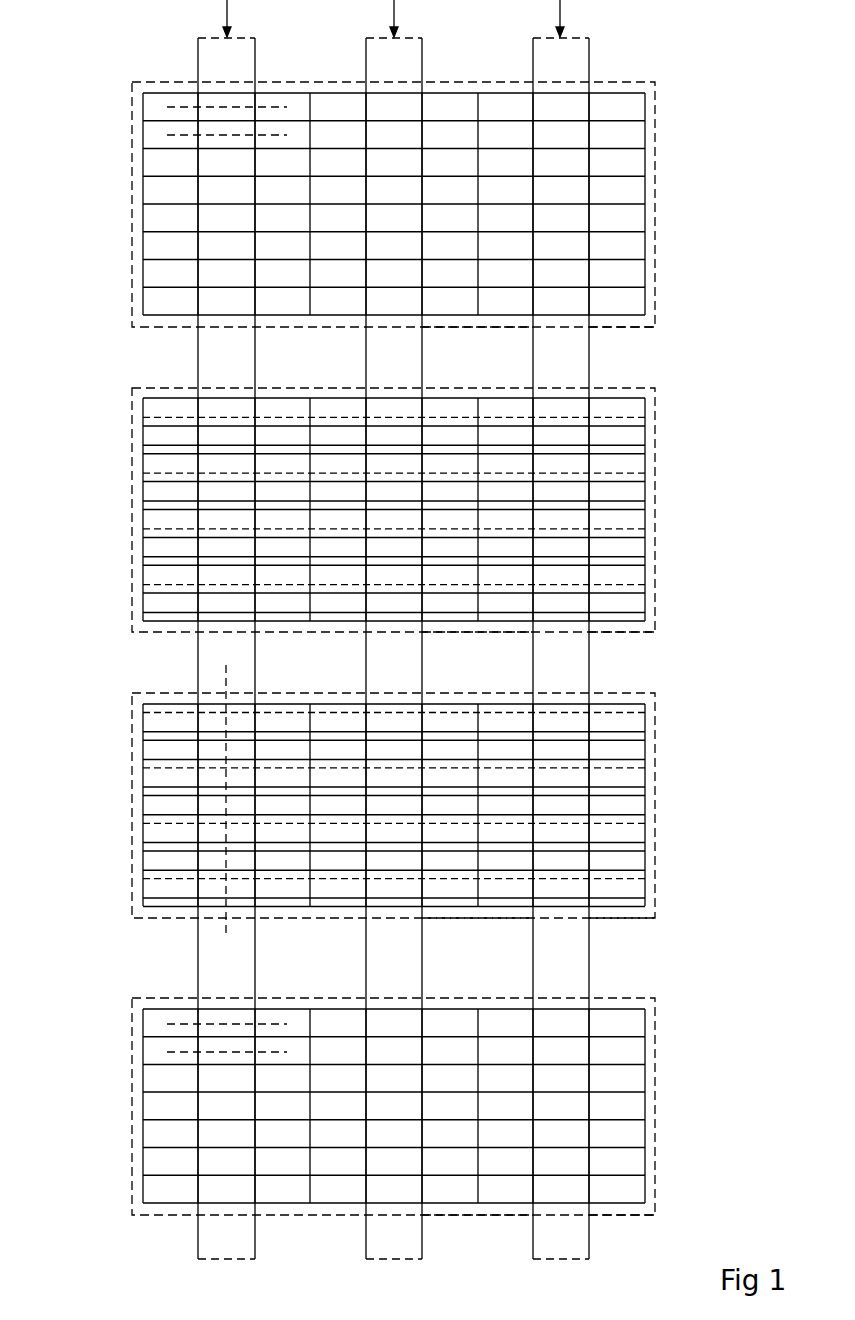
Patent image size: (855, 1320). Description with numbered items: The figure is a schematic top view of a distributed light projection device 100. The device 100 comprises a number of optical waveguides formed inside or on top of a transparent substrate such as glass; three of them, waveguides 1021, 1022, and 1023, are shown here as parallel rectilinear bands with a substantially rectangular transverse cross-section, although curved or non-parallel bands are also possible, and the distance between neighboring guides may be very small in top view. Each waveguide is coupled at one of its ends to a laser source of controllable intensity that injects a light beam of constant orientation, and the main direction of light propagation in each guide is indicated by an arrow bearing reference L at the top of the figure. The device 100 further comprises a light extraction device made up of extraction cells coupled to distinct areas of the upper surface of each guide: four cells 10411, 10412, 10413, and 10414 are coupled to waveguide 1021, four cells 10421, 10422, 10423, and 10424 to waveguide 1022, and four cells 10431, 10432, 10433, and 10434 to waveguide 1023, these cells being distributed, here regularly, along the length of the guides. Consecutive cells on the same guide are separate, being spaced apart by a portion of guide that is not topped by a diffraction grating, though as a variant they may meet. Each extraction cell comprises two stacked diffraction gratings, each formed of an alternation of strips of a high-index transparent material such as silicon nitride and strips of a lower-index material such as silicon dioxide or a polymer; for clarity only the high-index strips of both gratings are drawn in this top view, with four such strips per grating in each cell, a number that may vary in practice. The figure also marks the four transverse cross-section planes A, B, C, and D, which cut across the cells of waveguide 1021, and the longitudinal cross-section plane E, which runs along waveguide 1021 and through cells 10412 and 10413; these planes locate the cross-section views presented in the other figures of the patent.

The distributed light projection device 100 is at (727, 14).
The optical waveguide 1021 is at (197, 62).
The optical waveguide 1022 is at (365, 62).
The optical waveguide 1023 is at (532, 62).
The extraction cell 10411 is at (132, 276).
The extraction cell 10412 is at (132, 583).
The extraction cell 10413 is at (132, 893).
The extraction cell 10414 is at (132, 1125).
The extraction cell 10421 is at (440, 330).
The extraction cell 10422 is at (440, 635).
The extraction cell 10423 is at (440, 921).
The extraction cell 10424 is at (440, 1218).
The extraction cell 10431 is at (618, 330).
The extraction cell 10432 is at (618, 635).
The extraction cell 10433 is at (618, 921).
The extraction cell 10434 is at (620, 1225).
The main direction of light propagation L is at (229, 15).
The cross-section plane A- A is at (226, 1052).
The cross-section plane B- B is at (226, 1024).
The cross-section plane C- C is at (226, 135).
The cross-section plane D- D is at (227, 107).
The cross-section plane E- E is at (225, 804).